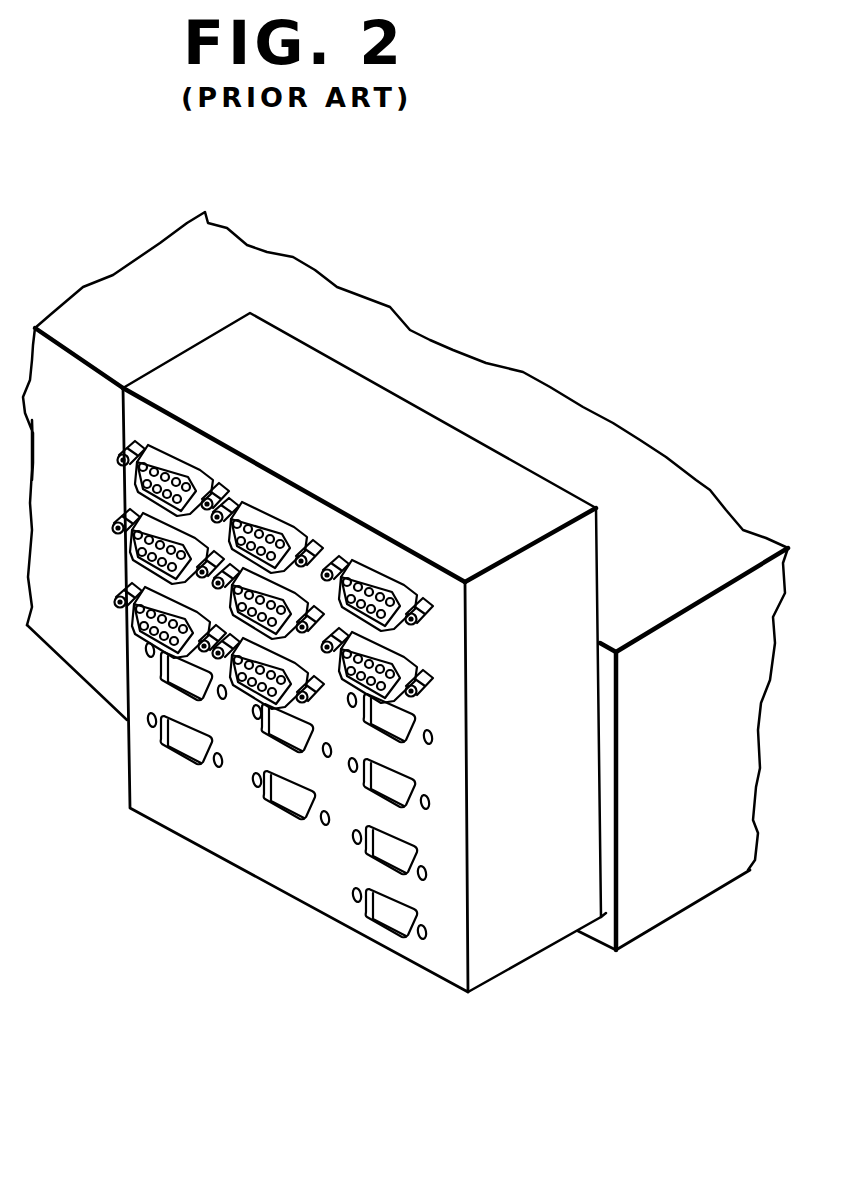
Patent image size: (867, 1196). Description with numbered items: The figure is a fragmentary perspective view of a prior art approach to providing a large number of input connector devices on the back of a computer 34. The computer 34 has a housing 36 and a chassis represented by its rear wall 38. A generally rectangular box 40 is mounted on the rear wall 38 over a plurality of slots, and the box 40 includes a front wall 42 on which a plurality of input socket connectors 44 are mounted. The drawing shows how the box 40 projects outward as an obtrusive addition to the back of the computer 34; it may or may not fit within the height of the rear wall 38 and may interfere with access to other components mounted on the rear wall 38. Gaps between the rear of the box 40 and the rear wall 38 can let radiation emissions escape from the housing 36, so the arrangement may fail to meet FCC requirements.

The computer 34 is at (550, 283).
The housing 36 is at (624, 432).
The rear wall 38 is at (88, 636).
The box 40 is at (248, 908).
The front wall 42 is at (157, 800).
The input socket connectors 44 is at (183, 464).